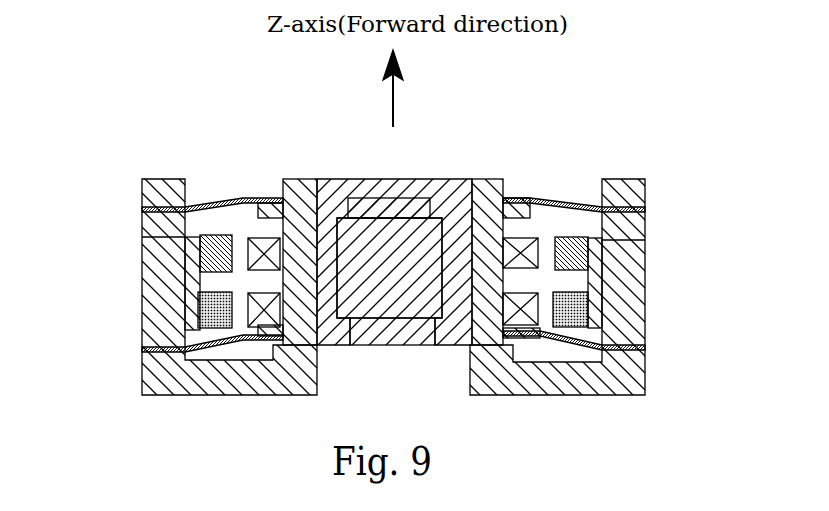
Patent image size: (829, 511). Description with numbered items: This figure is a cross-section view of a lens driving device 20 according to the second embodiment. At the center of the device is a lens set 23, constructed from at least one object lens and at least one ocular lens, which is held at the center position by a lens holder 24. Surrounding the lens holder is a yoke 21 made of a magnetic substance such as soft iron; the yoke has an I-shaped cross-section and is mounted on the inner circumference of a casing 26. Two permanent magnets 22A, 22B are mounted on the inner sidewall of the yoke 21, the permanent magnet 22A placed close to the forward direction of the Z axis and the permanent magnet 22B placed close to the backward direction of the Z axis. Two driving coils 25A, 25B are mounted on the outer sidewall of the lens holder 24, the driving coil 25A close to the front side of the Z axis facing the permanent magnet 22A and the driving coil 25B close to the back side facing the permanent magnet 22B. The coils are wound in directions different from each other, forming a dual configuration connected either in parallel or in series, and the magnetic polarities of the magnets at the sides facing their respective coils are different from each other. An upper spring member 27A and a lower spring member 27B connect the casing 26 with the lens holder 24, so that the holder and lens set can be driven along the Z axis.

The lens driving device 20 is at (376, 224).
The yoke 21 is at (187, 248).
The permanent magnet 22A is at (590, 244).
The permanent magnet 22B is at (590, 301).
The lens set 23 is at (367, 178).
The lens holder 24 is at (493, 178).
The driving coil 25A is at (530, 236).
The driving coil 25B is at (545, 337).
The casing 26 is at (143, 373).
The upper spring member 27A is at (192, 203).
The lower spring member 27B is at (196, 334).